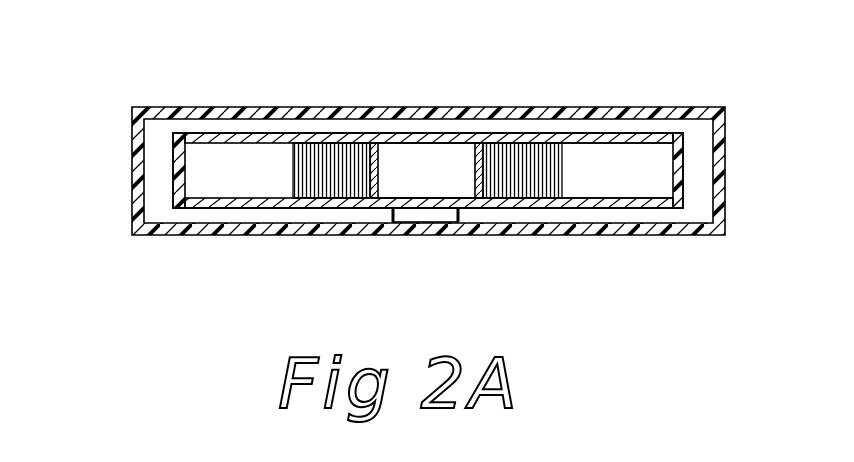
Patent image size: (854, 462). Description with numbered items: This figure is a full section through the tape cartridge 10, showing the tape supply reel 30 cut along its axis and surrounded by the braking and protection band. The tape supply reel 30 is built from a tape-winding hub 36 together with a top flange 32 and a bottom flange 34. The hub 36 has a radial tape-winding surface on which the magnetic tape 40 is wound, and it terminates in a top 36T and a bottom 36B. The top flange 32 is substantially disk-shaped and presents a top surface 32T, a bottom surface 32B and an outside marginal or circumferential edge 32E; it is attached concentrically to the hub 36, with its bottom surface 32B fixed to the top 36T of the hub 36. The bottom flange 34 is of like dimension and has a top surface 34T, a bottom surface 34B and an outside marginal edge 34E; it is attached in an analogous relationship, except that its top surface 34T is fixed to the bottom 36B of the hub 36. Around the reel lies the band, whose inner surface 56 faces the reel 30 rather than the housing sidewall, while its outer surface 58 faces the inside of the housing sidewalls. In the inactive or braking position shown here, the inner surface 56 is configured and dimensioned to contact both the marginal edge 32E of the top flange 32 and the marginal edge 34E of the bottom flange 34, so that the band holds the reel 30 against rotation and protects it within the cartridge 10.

The heater device 10 is at (620, 44).
The tape supply reel 30 is at (540, 118).
The top flange 32 is at (494, 133).
The top surface of top flange 32T is at (447, 134).
The bottom surface of top flange 32B is at (636, 142).
The outside marginal edge of top flange 32E is at (178, 134).
The bottom flange 34 is at (520, 207).
The top surface of bottom flange 34T is at (590, 199).
The bottom surface of bottom flange 34B is at (452, 209).
The outside marginal edge of bottom flange 34E is at (178, 207).
The tape-winding hub 36 is at (357, 142).
The top of hub 36T is at (403, 142).
The bottom of hub 36B is at (400, 210).
The magnetic tape 40 is at (559, 186).
The inner surface of band 56 is at (184, 153).
The outer surface of band 58 is at (172, 180).